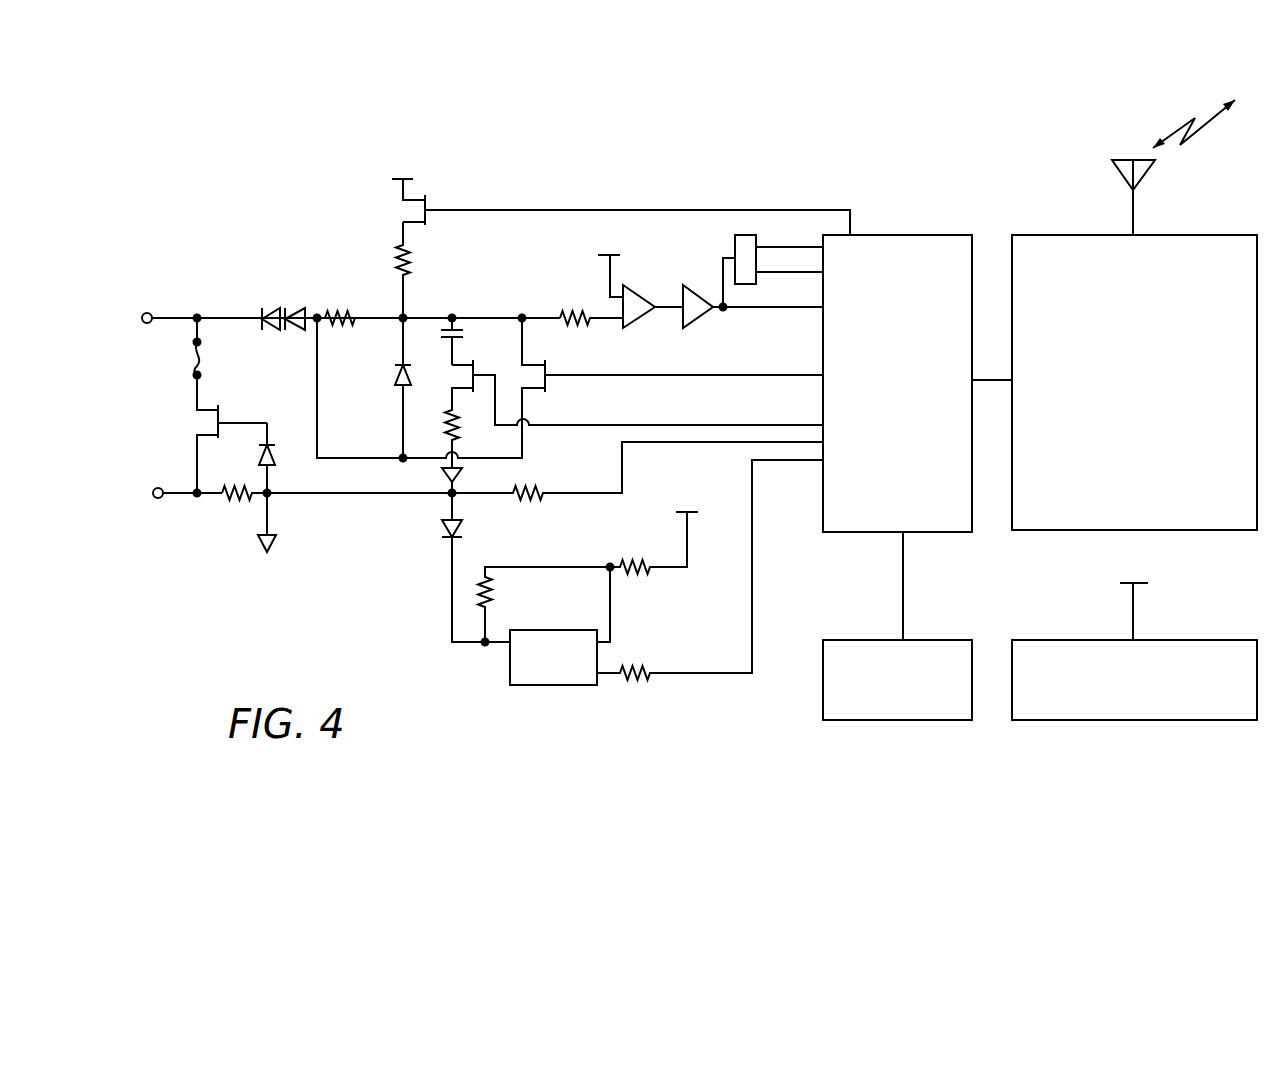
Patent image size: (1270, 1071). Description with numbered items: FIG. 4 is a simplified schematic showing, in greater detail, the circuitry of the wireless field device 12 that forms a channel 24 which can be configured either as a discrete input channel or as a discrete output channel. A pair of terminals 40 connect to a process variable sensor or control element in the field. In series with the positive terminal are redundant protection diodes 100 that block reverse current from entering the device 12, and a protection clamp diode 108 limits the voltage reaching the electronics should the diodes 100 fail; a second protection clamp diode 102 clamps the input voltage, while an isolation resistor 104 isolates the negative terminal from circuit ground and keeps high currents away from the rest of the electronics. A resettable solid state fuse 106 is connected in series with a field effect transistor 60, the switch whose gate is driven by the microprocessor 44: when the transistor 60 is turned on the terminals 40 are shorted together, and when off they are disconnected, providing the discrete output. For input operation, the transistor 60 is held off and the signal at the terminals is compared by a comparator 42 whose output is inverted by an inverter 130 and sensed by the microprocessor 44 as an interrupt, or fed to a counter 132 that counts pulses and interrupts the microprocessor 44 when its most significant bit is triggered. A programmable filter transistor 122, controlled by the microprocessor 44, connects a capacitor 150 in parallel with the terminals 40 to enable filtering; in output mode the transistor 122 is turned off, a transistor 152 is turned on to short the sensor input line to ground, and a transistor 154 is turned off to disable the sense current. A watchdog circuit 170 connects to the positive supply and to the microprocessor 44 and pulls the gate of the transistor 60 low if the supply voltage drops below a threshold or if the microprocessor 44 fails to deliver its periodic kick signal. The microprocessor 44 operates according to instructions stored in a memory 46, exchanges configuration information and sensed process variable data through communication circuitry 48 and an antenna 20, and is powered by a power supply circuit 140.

The wireless field device 12 is at (240, 184).
The antenna 20 is at (1112, 161).
The channel 24 is at (309, 533).
The terminals 40 is at (149, 324).
The comparator 42 is at (643, 287).
The microprocessor 44 is at (908, 442).
The memory 46 is at (823, 708).
The communication circuitry 48 is at (1077, 531).
The field effect transistor 60 is at (188, 423).
The redundant protection diodes 100 is at (300, 310).
The protection clamp diode 102 is at (276, 460).
The isolation resistor 104 is at (240, 500).
The resettable solid state fuse 106 is at (205, 360).
The protection clamp diode 108 is at (395, 380).
The programmable filter transistor 122 is at (464, 366).
The inverter 130 is at (703, 322).
The counter 132 is at (734, 250).
The power supply circuit 140 is at (1077, 640).
The capacitor 150 is at (450, 326).
The transistor 152 is at (538, 358).
The transistor 154 is at (410, 212).
The watchdog circuit 170 is at (510, 660).